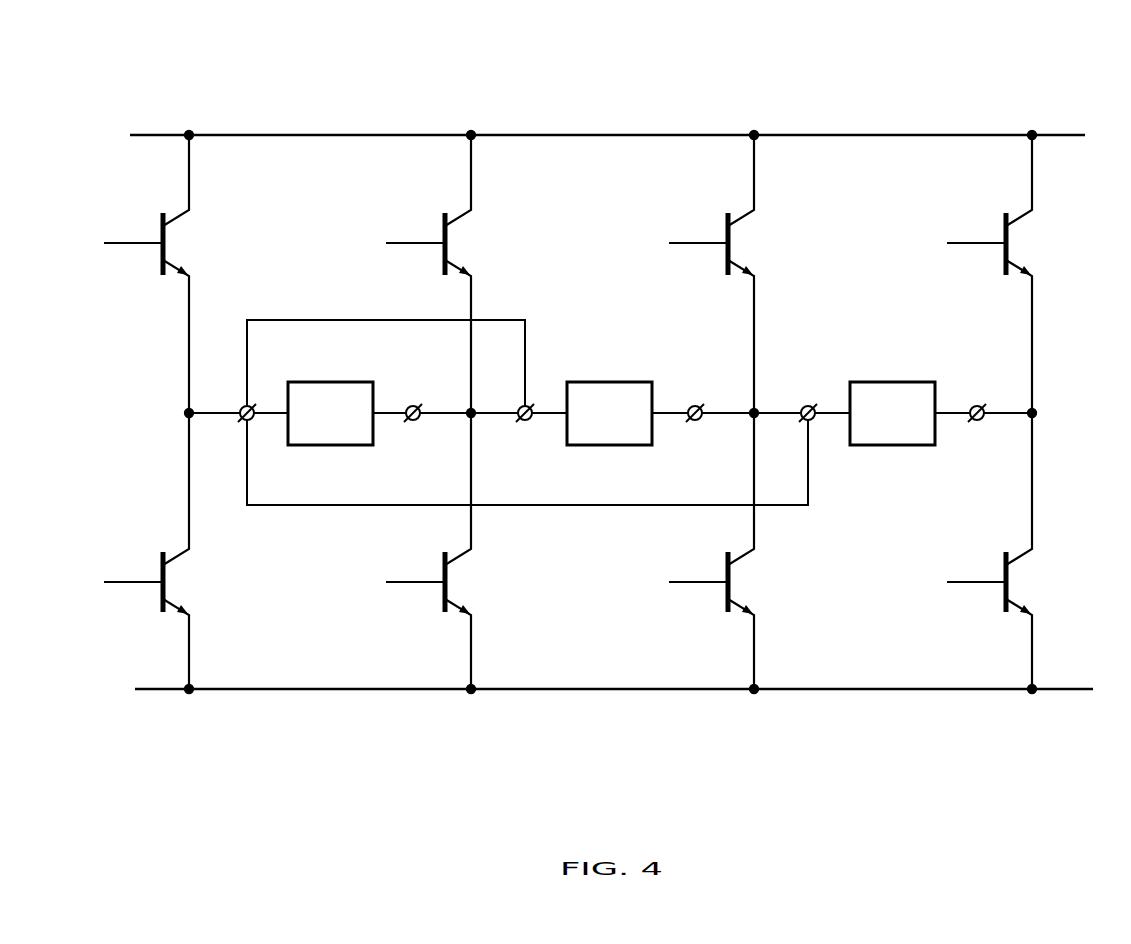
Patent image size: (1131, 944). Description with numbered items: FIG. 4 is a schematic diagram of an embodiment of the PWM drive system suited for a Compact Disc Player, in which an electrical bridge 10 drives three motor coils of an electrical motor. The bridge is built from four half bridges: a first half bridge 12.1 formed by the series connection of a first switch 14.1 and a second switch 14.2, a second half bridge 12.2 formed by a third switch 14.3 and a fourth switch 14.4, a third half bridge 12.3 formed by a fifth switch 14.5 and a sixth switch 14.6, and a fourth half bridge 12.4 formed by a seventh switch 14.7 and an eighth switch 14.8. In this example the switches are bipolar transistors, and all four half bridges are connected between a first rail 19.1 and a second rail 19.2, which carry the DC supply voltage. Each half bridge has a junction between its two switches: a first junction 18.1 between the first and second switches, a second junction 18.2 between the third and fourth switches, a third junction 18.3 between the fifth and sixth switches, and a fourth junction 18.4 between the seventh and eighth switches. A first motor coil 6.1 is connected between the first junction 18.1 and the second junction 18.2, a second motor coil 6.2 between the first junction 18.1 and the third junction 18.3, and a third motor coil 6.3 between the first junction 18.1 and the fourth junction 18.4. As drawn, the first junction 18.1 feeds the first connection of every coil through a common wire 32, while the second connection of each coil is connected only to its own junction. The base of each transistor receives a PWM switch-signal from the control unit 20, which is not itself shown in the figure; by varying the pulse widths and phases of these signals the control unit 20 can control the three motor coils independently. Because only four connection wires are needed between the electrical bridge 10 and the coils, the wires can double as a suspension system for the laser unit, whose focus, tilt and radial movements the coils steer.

The electrical bridge 10 is at (962, 116).
The first rail 19.1 is at (1070, 134).
The second rail 19.2 is at (1074, 688).
The first half bridge 12.1 is at (170, 724).
The second half bridge 12.2 is at (451, 724).
The third half bridge 12.3 is at (733, 724).
The fourth half bridge 12.4 is at (1012, 724).
The first switch 14.1 is at (186, 246).
The second switch 14.2 is at (186, 585).
The third switch 14.3 is at (468, 246).
The fourth switch 14.4 is at (468, 585).
The fifth switch 14.5 is at (751, 246).
The sixth switch 14.6 is at (751, 585).
The seventh switch 14.7 is at (1029, 246).
The eighth switch 14.8 is at (1029, 585).
The control unit 20 is at (103, 232).
The first junction 18.1 is at (186, 413).
The second junction 18.2 is at (476, 415).
The third junction 18.3 is at (758, 413).
The fourth junction 18.4 is at (1036, 413).
The common wire 32 is at (217, 407).
The first motor coil 6.1 is at (330, 381).
The second motor coil 6.2 is at (613, 381).
The third motor coil 6.3 is at (891, 381).